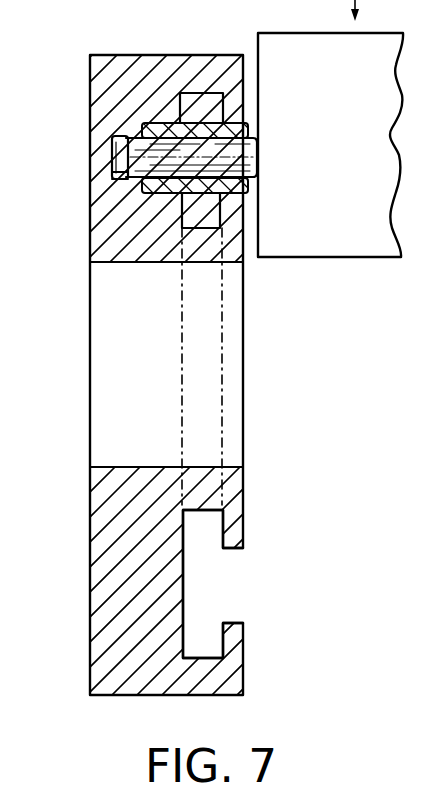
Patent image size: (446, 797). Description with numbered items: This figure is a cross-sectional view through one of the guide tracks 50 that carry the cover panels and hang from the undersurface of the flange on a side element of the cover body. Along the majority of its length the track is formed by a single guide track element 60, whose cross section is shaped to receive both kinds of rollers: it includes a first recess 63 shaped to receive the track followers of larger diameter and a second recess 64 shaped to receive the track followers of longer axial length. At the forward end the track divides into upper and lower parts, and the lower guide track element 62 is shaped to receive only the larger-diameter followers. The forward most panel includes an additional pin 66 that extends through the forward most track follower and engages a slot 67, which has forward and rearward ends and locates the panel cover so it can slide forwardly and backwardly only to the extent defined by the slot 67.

The guide track 50 is at (214, 27).
The single guide track element 60 is at (268, 151).
The lower guide track element 62 is at (232, 593).
The first recess 63 is at (212, 100).
The second recess 64 is at (160, 121).
The additional pin 66 is at (113, 148).
The slot 67 is at (112, 177).